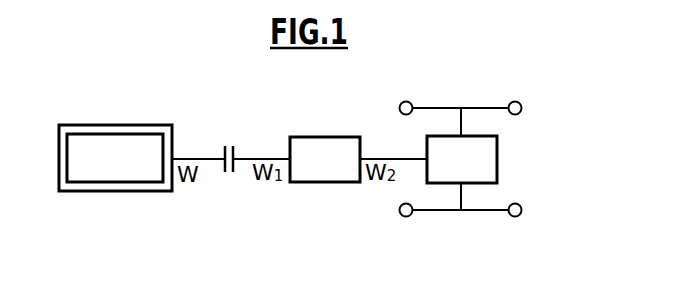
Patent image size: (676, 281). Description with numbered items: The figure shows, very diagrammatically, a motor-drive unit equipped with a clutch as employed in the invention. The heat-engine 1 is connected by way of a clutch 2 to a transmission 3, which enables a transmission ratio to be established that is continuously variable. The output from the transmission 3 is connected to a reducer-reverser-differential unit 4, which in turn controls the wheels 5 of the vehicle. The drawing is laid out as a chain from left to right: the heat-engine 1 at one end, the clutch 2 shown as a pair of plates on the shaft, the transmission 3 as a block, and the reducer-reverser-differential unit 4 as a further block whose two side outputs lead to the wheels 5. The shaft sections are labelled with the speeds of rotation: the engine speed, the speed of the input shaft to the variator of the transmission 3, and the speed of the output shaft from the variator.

The heat-engine 1 is at (117, 142).
The clutch 2 is at (229, 144).
The transmission 3 is at (328, 148).
The reducer-reverser-differential unit 4 is at (481, 162).
The wheels 5 is at (481, 106).